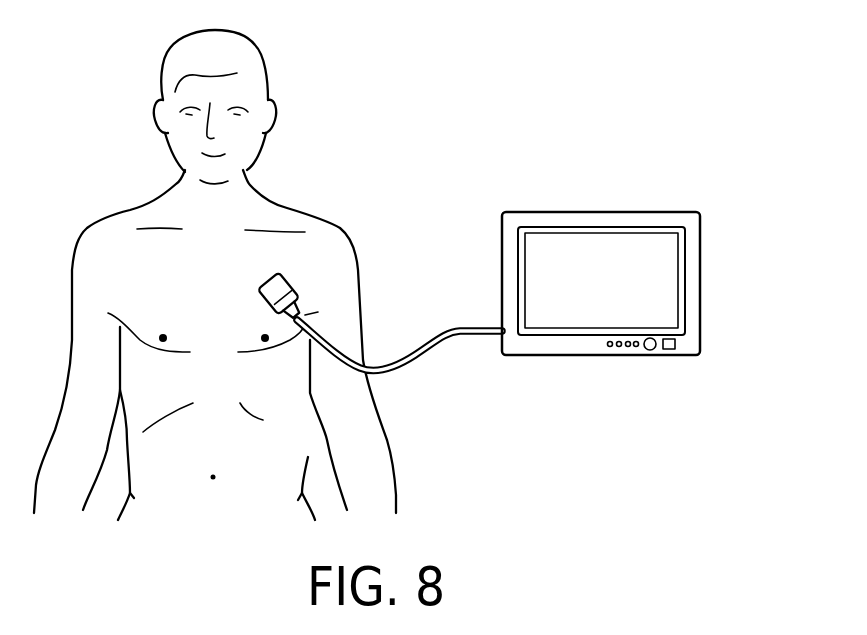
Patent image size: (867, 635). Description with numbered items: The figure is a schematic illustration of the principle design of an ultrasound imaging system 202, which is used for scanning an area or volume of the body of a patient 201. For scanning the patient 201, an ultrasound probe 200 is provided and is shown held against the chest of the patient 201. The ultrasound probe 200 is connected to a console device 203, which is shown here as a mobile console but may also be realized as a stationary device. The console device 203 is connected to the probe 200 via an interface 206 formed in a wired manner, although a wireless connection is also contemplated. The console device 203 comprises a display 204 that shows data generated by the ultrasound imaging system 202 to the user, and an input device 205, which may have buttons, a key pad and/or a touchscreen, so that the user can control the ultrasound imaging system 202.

The ultrasound probe 200 is at (282, 287).
The patient 201 is at (98, 222).
The ultrasound imaging system 202 is at (603, 230).
The console device 203 is at (563, 212).
The display 204 is at (648, 248).
The input device 205 is at (668, 355).
The interface 206 is at (440, 323).